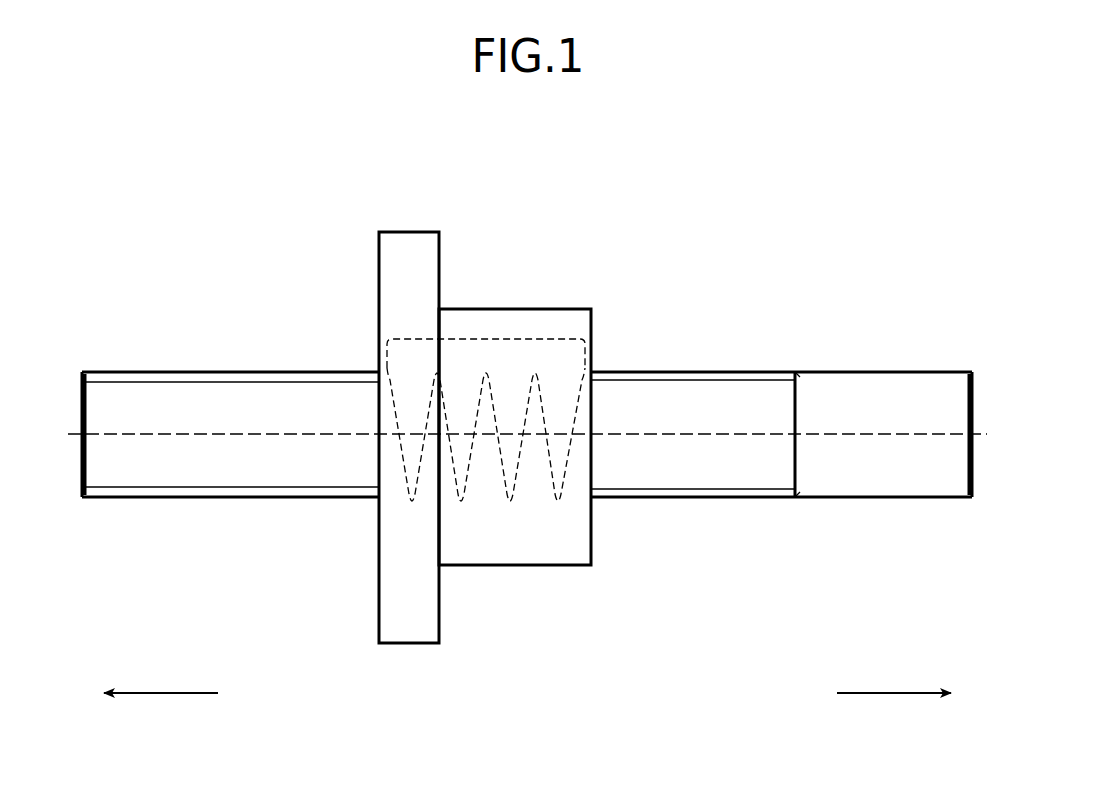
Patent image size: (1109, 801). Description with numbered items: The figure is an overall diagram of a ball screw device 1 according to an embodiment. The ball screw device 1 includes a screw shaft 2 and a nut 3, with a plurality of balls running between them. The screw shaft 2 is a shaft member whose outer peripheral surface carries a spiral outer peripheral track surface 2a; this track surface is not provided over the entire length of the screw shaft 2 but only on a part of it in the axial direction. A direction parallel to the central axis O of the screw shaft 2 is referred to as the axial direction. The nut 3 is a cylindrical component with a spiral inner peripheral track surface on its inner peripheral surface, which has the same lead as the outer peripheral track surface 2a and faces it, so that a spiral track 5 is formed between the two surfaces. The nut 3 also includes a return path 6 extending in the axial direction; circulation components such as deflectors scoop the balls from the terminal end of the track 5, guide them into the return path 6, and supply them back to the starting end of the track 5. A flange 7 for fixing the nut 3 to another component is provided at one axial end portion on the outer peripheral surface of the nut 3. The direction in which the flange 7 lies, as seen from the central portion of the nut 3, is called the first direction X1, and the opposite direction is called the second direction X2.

The ball screw device 1 is at (878, 210).
The screw shaft 2 is at (870, 352).
The outer peripheral track surface 2a is at (697, 378).
The nut 3 is at (561, 293).
The track 5 is at (550, 488).
The return path 6 is at (477, 339).
The flange 7 is at (405, 231).
The central axis O is at (915, 434).
The first direction X1 is at (894, 710).
The second direction X2 is at (161, 710).